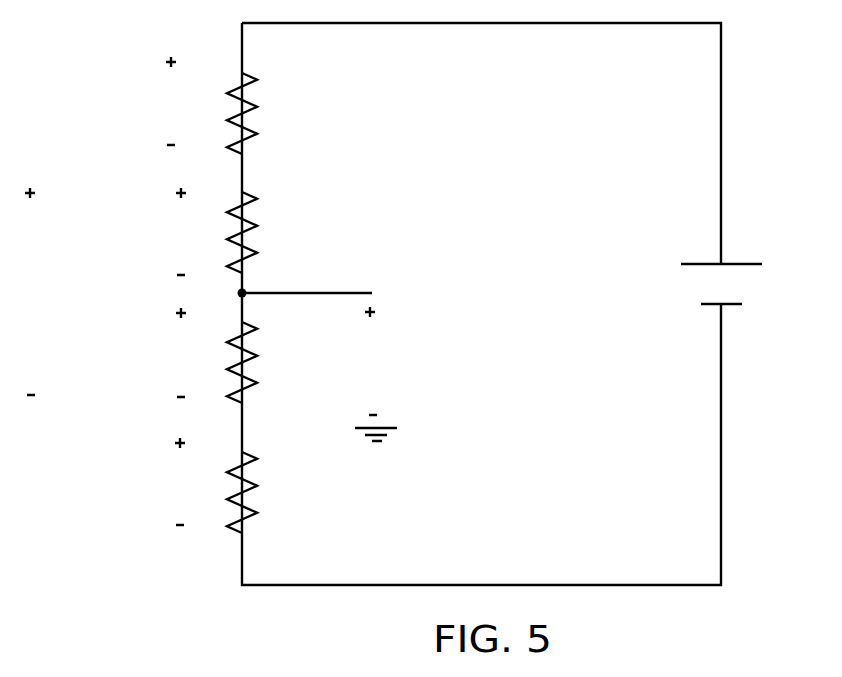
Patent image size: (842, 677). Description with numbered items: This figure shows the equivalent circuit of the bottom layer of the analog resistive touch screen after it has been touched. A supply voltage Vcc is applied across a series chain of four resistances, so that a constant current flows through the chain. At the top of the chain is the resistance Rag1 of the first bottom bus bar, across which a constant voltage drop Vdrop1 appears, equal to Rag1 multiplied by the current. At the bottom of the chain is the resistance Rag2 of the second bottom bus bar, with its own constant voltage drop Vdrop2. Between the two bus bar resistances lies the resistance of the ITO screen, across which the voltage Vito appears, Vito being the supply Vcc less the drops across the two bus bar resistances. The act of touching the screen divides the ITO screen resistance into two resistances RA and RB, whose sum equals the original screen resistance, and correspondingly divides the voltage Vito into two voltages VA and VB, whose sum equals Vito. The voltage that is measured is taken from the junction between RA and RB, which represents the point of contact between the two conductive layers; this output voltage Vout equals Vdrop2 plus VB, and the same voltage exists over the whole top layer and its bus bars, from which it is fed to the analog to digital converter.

The resistance of the first bus bar Rag1 is at (277, 113).
The first divided screen resistance RA is at (273, 232).
The second divided screen resistance RB is at (272, 362).
The resistance of the second bus bar Rag2 is at (282, 492).
The applied voltage Vcc is at (748, 284).
The output voltage Vout is at (344, 365).
The voltage drop across Rag1 Vdrop1 is at (166, 101).
The first divided screen voltage VA is at (183, 231).
The second divided screen voltage VB is at (181, 352).
The voltage drop across Rag2 Vdrop2 is at (161, 481).
The voltage drop across the ITO screen Vito is at (39, 291).